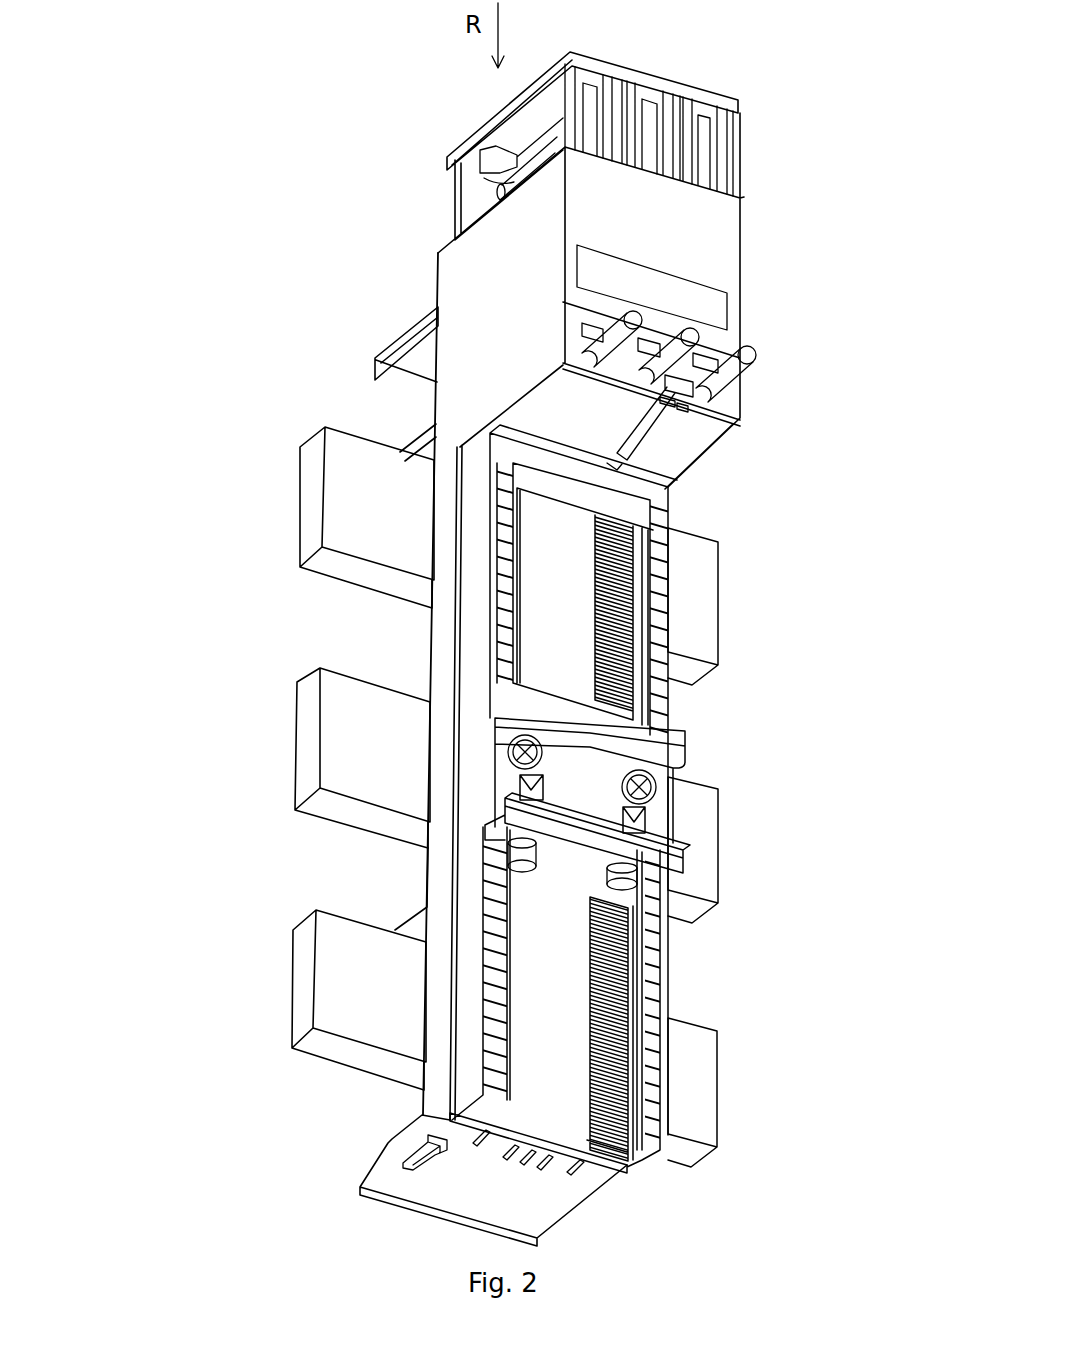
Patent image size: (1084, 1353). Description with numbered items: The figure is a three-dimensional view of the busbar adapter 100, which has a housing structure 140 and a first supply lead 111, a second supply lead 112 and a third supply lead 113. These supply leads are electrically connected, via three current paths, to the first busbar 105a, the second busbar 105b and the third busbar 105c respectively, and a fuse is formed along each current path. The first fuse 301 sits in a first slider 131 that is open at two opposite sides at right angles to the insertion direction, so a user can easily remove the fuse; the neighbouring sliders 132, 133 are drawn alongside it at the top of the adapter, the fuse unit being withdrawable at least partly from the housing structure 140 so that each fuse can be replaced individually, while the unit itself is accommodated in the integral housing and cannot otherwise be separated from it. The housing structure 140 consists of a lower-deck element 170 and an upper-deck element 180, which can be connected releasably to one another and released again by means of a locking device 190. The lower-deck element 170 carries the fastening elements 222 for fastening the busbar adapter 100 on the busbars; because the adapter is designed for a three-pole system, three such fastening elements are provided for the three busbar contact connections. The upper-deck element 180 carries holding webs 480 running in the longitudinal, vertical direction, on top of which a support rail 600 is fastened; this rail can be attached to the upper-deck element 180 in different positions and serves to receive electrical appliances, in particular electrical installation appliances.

The busbar adapter 100 is at (300, 118).
The first slider 131 is at (600, 61).
The second connection slot 132 is at (660, 80).
The third connection slot 133 is at (715, 97).
The first fuse 301 is at (512, 181).
The first supply lead 111 is at (641, 319).
The second supply lead 112 is at (698, 338).
The third supply lead 113 is at (757, 355).
The locking device 190 is at (652, 427).
The first busbar 105a is at (310, 467).
The second busbar 105b is at (302, 707).
The third busbar 105c is at (297, 937).
The fastening elements 222 is at (417, 690).
The support rail 600 is at (678, 740).
The holding webs 480 is at (497, 978).
The housing structure 140 is at (203, 1093).
The lower-deck element 170 is at (442, 1053).
The upper-deck element 180 is at (422, 1115).